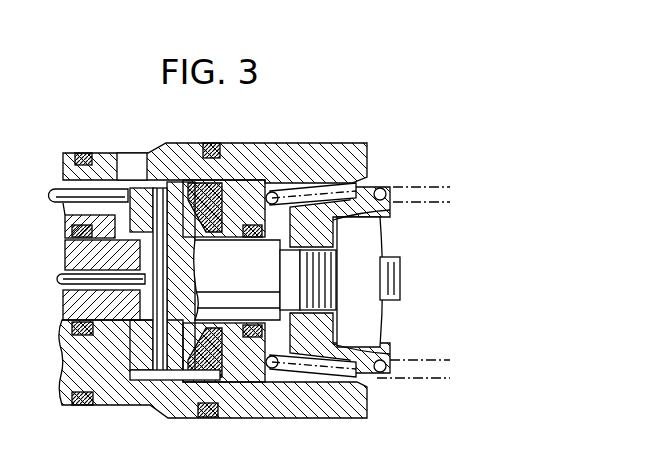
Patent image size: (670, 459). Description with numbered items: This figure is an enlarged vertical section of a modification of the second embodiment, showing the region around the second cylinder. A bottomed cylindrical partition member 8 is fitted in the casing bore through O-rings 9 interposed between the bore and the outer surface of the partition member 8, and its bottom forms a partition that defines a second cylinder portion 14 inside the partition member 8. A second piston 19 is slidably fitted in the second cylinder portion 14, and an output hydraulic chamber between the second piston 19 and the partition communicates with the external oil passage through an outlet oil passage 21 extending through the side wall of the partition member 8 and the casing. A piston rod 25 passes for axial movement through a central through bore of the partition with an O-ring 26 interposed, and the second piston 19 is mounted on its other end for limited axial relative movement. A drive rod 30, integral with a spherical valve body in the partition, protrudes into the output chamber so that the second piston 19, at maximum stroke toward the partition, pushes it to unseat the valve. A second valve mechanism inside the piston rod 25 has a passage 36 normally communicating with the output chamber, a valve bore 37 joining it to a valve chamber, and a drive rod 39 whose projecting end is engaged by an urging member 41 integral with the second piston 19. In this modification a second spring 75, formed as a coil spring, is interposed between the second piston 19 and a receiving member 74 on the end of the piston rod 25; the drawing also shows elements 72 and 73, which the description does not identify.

The partition member 8 is at (279, 142).
The O-rings 9 is at (82, 408).
The second cylinder portion 14 is at (303, 378).
The second piston 19 is at (235, 377).
The outlet oil passage 21 is at (132, 160).
The piston rod 25 is at (258, 287).
The O-ring 26 is at (80, 333).
The drive rod 30 is at (58, 203).
The passage 36 is at (141, 308).
The valve bore 37 is at (108, 281).
The drive rod 39 is at (60, 281).
The urging member 41 is at (160, 258).
The retaining ring 72 is at (380, 313).
The axis line 73 is at (418, 186).
The receiving member 74 is at (327, 242).
The second spring 75 is at (324, 183).